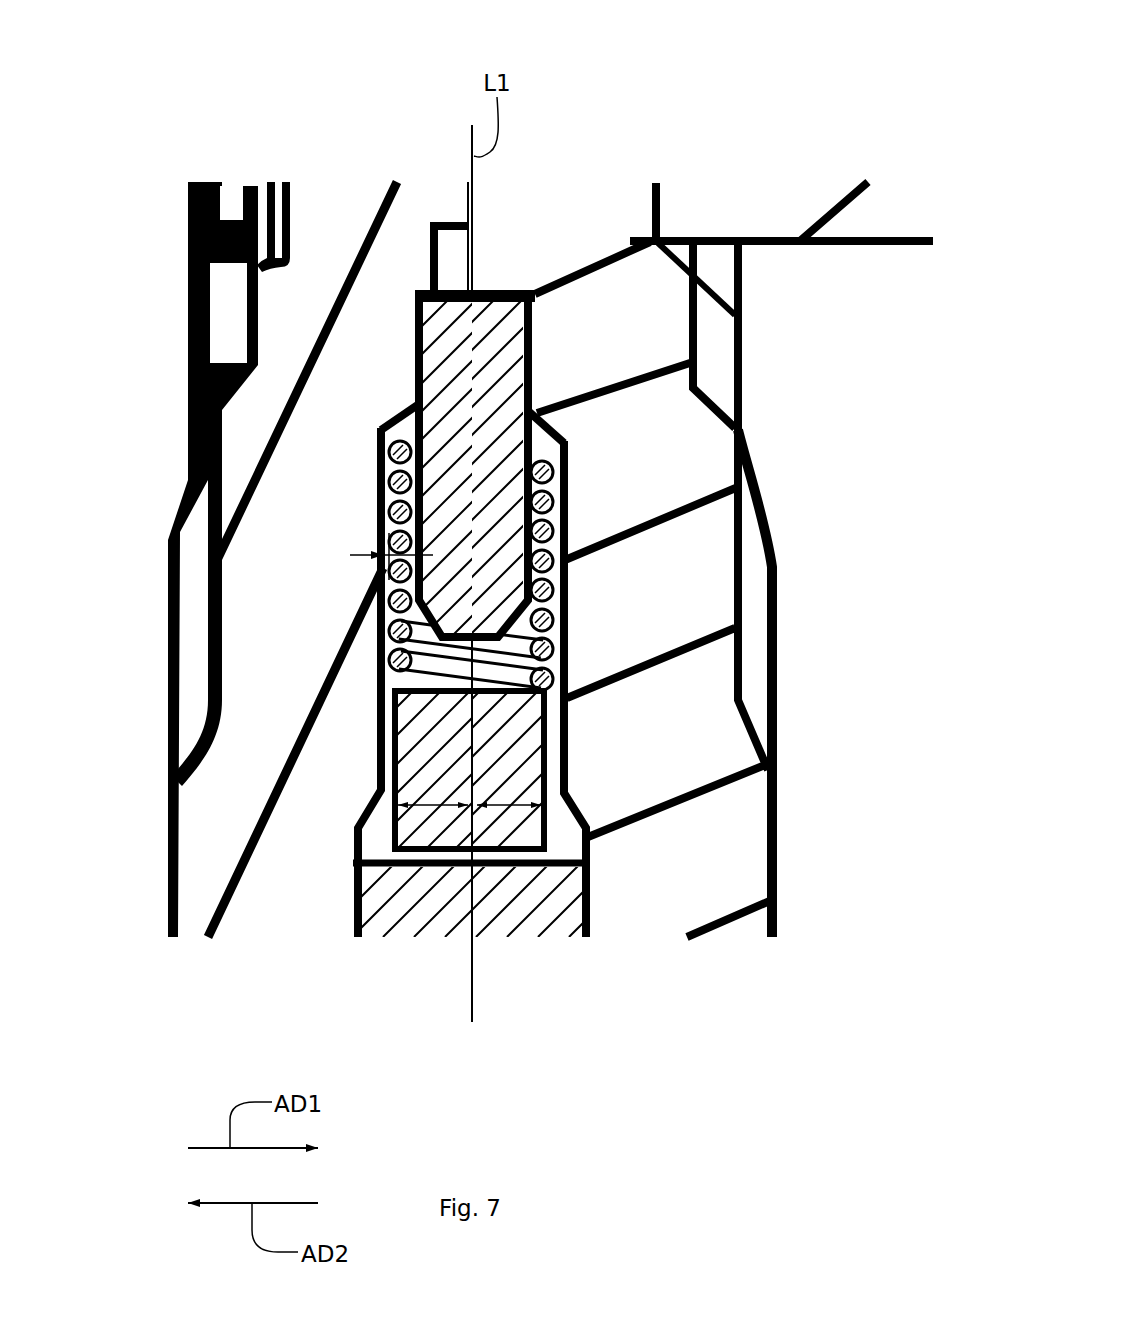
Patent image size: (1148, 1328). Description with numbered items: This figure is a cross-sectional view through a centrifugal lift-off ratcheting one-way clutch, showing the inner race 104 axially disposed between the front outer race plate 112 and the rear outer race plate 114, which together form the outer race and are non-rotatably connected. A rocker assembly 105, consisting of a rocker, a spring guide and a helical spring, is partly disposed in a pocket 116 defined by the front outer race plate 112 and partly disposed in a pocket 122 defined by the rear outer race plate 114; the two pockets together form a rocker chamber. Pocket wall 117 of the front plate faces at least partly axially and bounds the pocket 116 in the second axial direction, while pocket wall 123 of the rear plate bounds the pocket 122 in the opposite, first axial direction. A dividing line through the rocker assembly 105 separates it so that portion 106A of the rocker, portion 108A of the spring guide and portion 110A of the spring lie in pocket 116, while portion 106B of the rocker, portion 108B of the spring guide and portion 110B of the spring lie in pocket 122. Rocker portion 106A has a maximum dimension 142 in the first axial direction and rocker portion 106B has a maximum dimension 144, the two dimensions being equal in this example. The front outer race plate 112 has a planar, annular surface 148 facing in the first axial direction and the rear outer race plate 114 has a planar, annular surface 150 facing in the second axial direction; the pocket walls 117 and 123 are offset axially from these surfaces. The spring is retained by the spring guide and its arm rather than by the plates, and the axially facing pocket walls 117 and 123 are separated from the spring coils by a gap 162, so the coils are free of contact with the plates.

The inner race 104 is at (498, 905).
The rocker assembly 105 is at (373, 358).
The portion of rocker 106A is at (428, 718).
The portion of rocker 106B is at (530, 730).
The portion of spring guide 108A is at (447, 333).
The portion of spring guide 108B is at (498, 322).
The portion of spring 110A is at (395, 448).
The portion of spring 110B is at (566, 473).
The front outer race plate 112 is at (324, 205).
The rear outer race plate 114 is at (628, 190).
The pocket 116 is at (405, 428).
The pocket wall 117 is at (378, 525).
The pocket 122 is at (545, 440).
The pocket wall 123 is at (558, 528).
The maximum dimension 142 is at (428, 805).
The maximum dimension 144 is at (510, 812).
The planar annular surface 148 is at (468, 201).
The planar annular surface 150 is at (474, 215).
The gap 162 is at (362, 557).